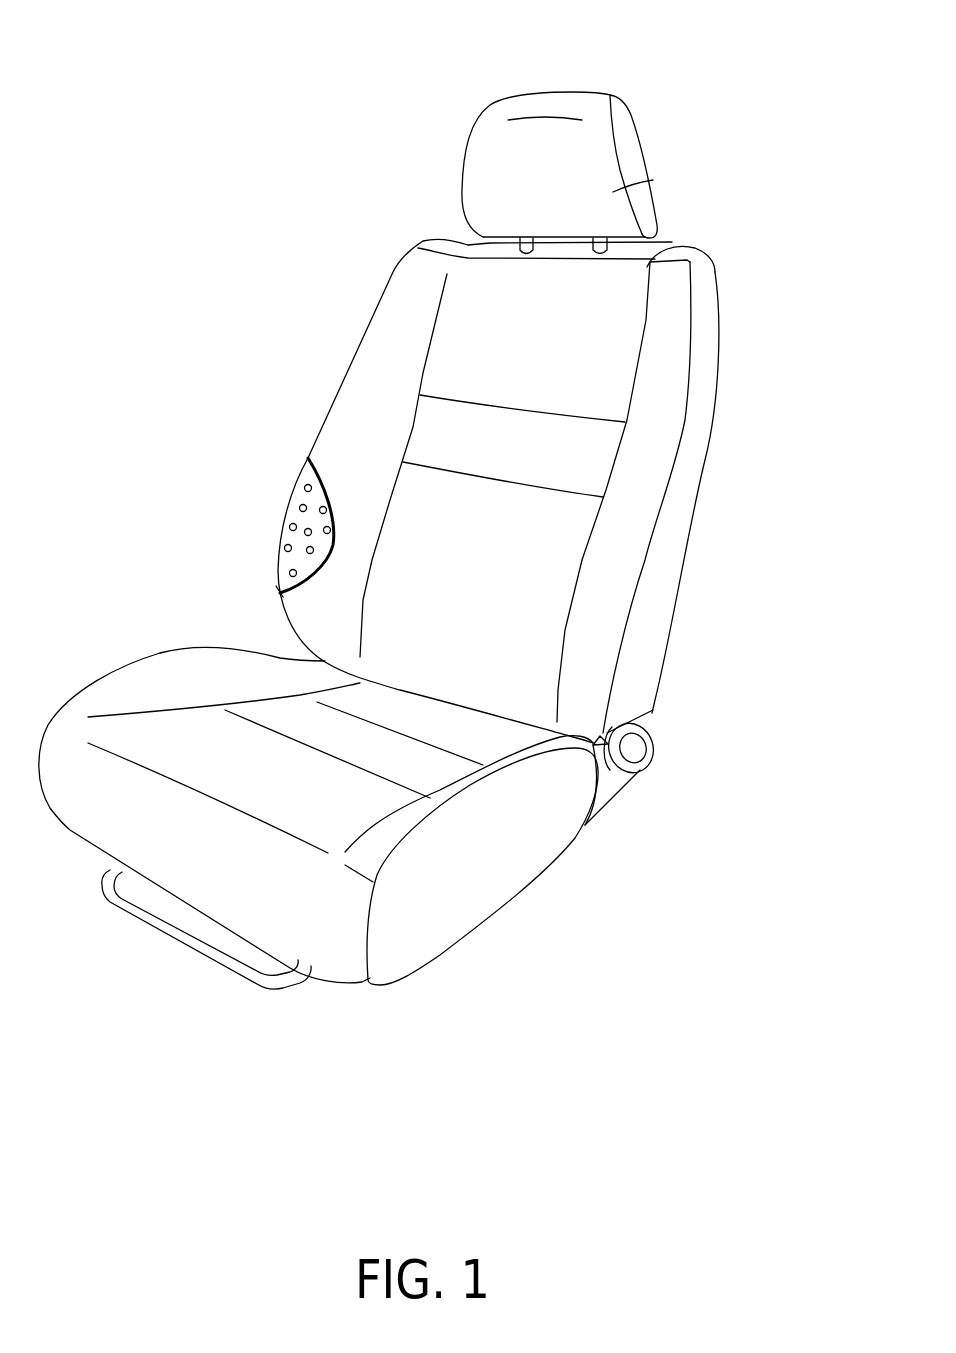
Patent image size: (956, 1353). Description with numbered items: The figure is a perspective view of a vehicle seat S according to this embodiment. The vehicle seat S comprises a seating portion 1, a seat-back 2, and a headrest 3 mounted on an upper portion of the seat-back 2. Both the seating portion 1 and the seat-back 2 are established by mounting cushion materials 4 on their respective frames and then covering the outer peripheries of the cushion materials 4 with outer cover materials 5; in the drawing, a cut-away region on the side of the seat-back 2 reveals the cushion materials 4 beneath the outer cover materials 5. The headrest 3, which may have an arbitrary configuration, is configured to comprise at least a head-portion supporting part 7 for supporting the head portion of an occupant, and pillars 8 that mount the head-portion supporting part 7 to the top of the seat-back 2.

The vehicle seat S is at (280, 92).
The seating portion 1 is at (557, 905).
The seat-back 2 is at (742, 556).
The headrest 3 is at (668, 88).
The cushion materials 4 is at (296, 516).
The outer cover materials 5 is at (333, 428).
The head-portion supporting part 7 is at (617, 192).
The pillars 8 is at (605, 262).